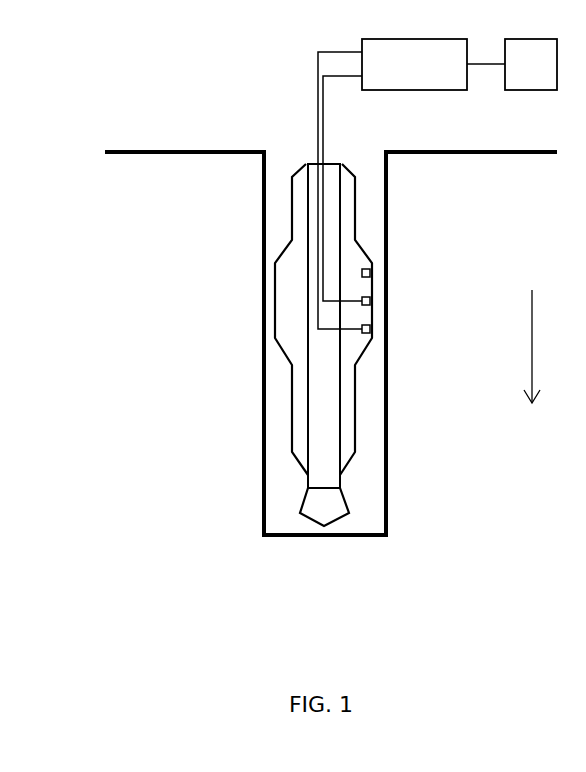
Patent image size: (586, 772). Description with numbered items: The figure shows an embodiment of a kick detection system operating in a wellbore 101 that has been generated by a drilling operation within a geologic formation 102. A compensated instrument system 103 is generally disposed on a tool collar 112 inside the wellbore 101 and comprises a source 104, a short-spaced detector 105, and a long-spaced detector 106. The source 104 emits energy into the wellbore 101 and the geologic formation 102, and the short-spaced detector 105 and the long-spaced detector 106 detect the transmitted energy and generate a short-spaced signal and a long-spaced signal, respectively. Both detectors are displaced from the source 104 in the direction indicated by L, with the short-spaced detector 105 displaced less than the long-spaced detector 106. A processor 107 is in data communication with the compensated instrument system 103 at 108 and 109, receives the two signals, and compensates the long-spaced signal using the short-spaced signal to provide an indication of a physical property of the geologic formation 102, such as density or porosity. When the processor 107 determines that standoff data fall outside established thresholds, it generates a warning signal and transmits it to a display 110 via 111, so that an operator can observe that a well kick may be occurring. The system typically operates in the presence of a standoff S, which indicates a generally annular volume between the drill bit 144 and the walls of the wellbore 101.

The wellbore 101 is at (278, 459).
The geologic formation 102 is at (158, 358).
The compensated instrument system 103 is at (372, 252).
The source 104 is at (371, 269).
The short-spaced detector 105 is at (371, 299).
The long-spaced detector 106 is at (371, 330).
The processor 107 is at (429, 74).
The data communication link 108 is at (323, 113).
The data communication link 109 is at (318, 113).
The display 110 is at (546, 74).
The transmission link 111 is at (480, 66).
The tool collar 112 is at (348, 424).
The drill bit 144 is at (324, 507).
The direction of displacement L is at (532, 317).
The standoff S is at (375, 500).